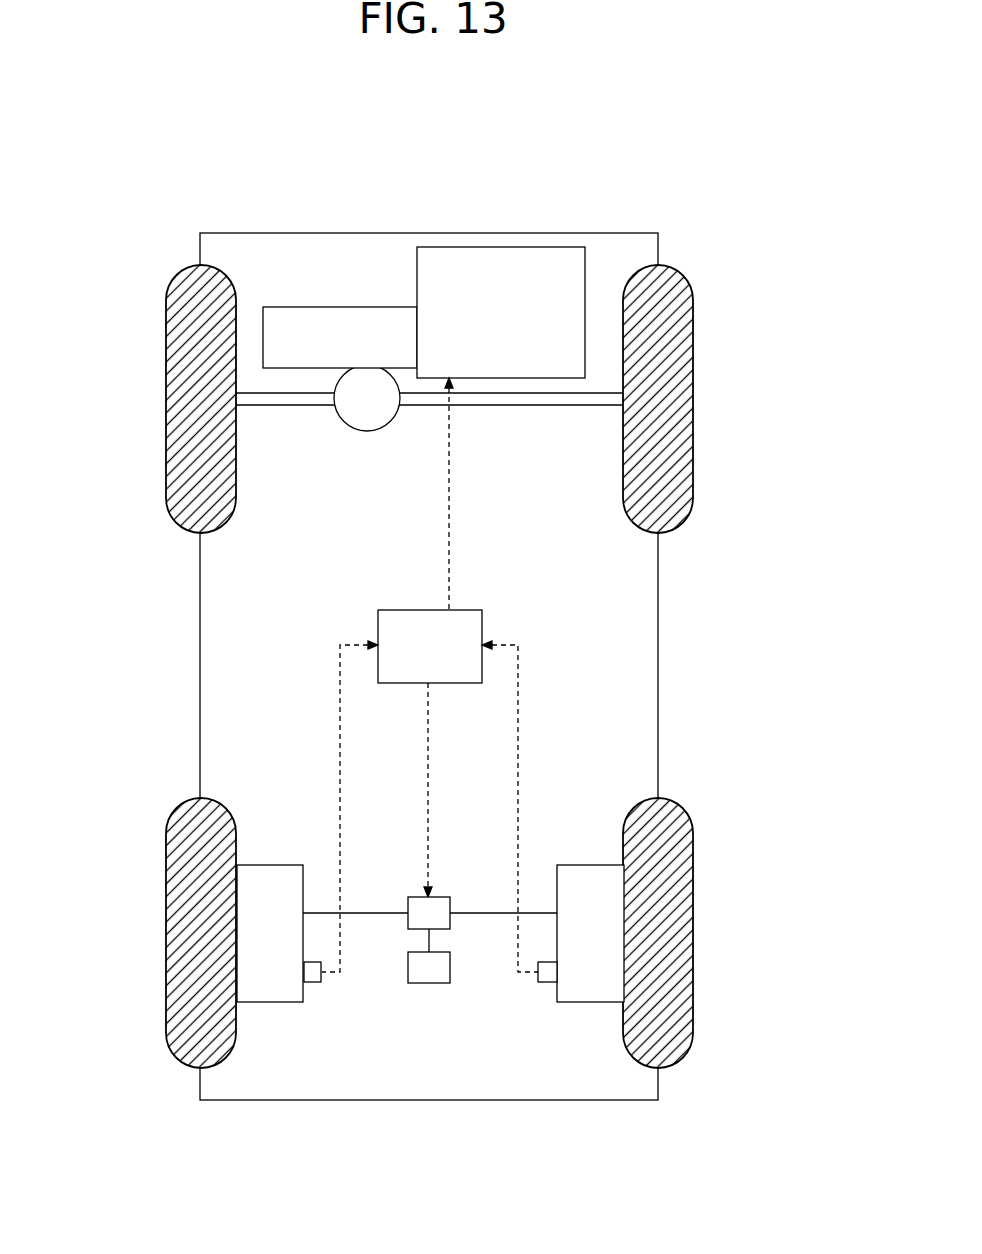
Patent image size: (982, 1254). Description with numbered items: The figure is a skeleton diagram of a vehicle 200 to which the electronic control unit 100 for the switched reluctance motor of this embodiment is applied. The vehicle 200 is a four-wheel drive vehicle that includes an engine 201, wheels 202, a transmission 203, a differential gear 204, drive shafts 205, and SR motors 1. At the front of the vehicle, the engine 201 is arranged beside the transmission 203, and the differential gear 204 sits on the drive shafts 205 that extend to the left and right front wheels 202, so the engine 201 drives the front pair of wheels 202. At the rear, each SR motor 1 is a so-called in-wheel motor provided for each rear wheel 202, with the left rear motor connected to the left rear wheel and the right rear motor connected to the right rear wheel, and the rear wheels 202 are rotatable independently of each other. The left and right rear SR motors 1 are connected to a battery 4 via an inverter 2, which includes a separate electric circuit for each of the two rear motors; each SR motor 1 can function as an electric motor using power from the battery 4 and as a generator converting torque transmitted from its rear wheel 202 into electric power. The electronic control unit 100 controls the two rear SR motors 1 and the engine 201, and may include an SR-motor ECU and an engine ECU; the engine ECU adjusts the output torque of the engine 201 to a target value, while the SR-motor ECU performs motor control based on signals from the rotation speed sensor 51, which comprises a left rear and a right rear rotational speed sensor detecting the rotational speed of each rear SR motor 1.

The vehicle 200 is at (649, 176).
The engine 201 is at (516, 247).
The wheels 202 is at (166, 398).
The transmission 203 is at (298, 307).
The differential gear 204 is at (368, 431).
The drive shafts 205 is at (286, 405).
The electronic control unit 100 is at (463, 610).
The SR motor 1 is at (257, 865).
The inverter 2 is at (434, 897).
The battery 4 is at (427, 983).
The rotation speed sensor 51 is at (312, 982).